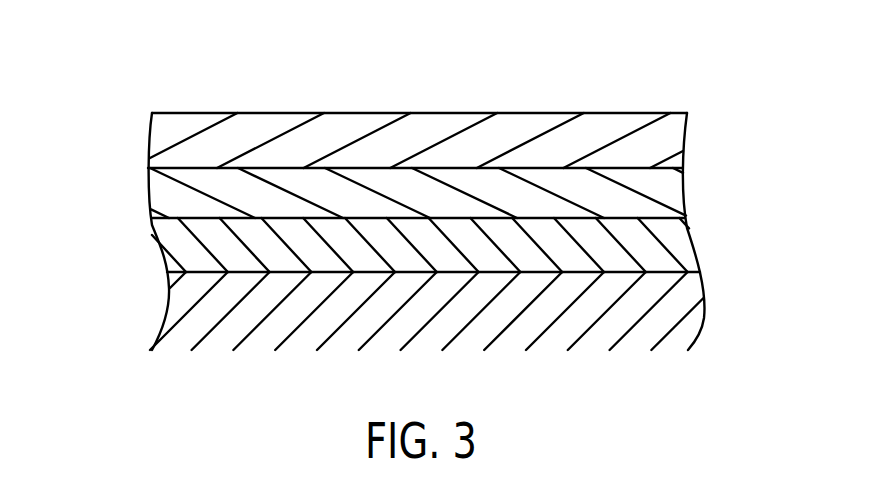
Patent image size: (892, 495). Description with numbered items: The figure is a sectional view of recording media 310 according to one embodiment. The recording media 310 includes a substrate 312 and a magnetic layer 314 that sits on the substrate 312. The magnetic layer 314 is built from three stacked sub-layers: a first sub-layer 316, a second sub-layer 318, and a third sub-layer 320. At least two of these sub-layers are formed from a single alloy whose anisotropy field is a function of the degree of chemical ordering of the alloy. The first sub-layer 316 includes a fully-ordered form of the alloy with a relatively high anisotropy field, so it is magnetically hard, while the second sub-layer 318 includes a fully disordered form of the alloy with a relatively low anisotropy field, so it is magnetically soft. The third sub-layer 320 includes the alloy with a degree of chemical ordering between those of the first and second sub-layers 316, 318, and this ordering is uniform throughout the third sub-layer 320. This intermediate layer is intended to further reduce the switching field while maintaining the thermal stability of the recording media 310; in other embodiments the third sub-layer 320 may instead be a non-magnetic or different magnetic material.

The recording media 310 is at (718, 136).
The substrate 312 is at (612, 325).
The magnetic layer 314 is at (135, 115).
The first sub-layer 316 is at (648, 253).
The second sub-layer 318 is at (412, 138).
The third sub-layer 320 is at (520, 200).